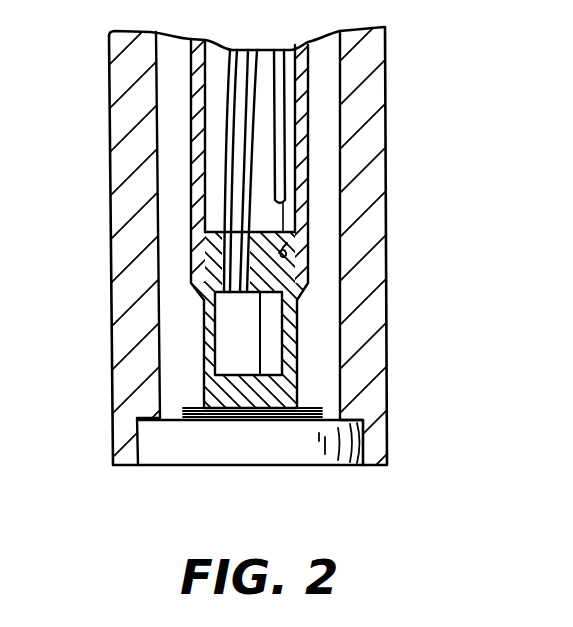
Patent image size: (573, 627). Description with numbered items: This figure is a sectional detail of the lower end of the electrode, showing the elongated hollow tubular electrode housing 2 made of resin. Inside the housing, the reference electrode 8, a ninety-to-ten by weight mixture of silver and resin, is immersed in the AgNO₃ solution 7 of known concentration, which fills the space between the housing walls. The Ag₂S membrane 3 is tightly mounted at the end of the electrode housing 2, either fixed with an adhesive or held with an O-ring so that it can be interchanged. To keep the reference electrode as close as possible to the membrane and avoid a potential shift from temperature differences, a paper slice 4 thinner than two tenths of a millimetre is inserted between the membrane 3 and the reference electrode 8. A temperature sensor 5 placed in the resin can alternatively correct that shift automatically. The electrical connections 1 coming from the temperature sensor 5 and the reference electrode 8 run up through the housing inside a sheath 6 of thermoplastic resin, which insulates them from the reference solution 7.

The electrical connections 1 is at (223, 168).
The electrode housing 2 is at (363, 67).
The Ag₂S membrane 3 is at (233, 440).
The paper slice 4 is at (315, 407).
The temperature sensor 5 is at (274, 325).
The sheath 6 is at (310, 157).
The AgNO₃ solution 7 is at (172, 83).
The reference electrode 8 is at (210, 387).